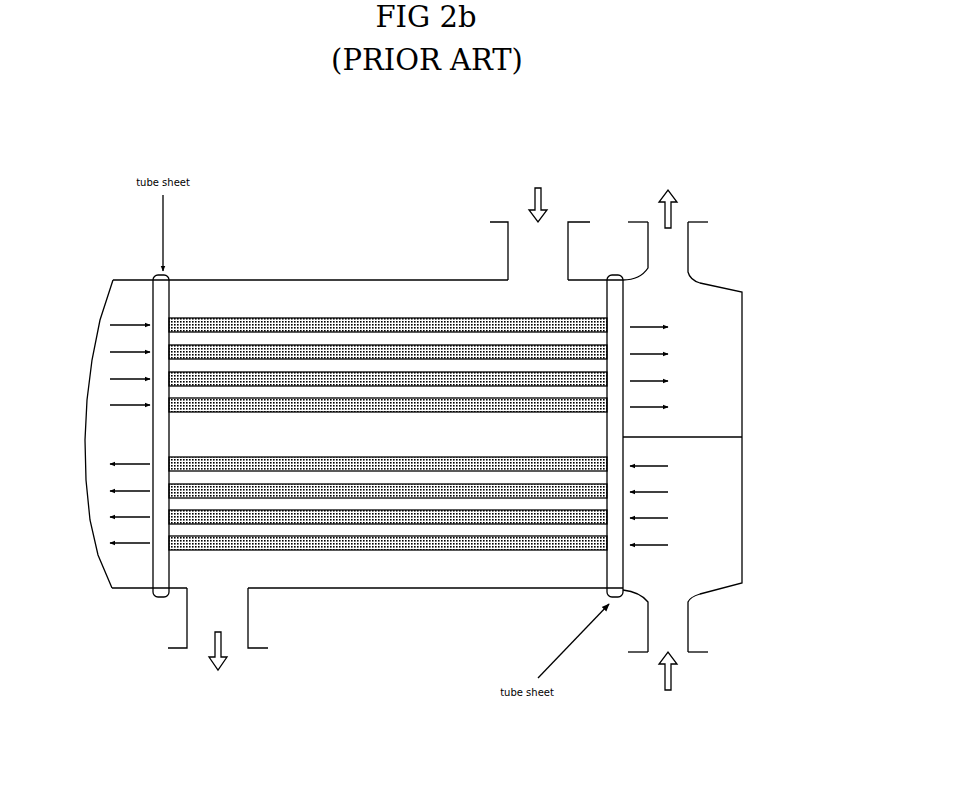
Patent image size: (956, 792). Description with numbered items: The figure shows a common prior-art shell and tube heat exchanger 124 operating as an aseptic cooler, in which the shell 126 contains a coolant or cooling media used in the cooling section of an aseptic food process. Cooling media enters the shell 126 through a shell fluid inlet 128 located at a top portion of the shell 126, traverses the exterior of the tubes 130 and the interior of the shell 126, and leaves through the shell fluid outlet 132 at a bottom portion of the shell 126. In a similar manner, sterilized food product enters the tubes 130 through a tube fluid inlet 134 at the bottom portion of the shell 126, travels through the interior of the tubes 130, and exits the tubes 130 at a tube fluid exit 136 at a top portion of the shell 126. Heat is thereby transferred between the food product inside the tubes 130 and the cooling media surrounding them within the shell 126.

The shell and tube heat exchanger 124 is at (289, 172).
The shell 126 is at (262, 276).
The shell fluid inlet 128 is at (504, 258).
The tubes 130 is at (386, 552).
The shell fluid outlet 132 is at (184, 605).
The tube fluid inlet 134 is at (692, 623).
The tube fluid exit 136 is at (694, 248).